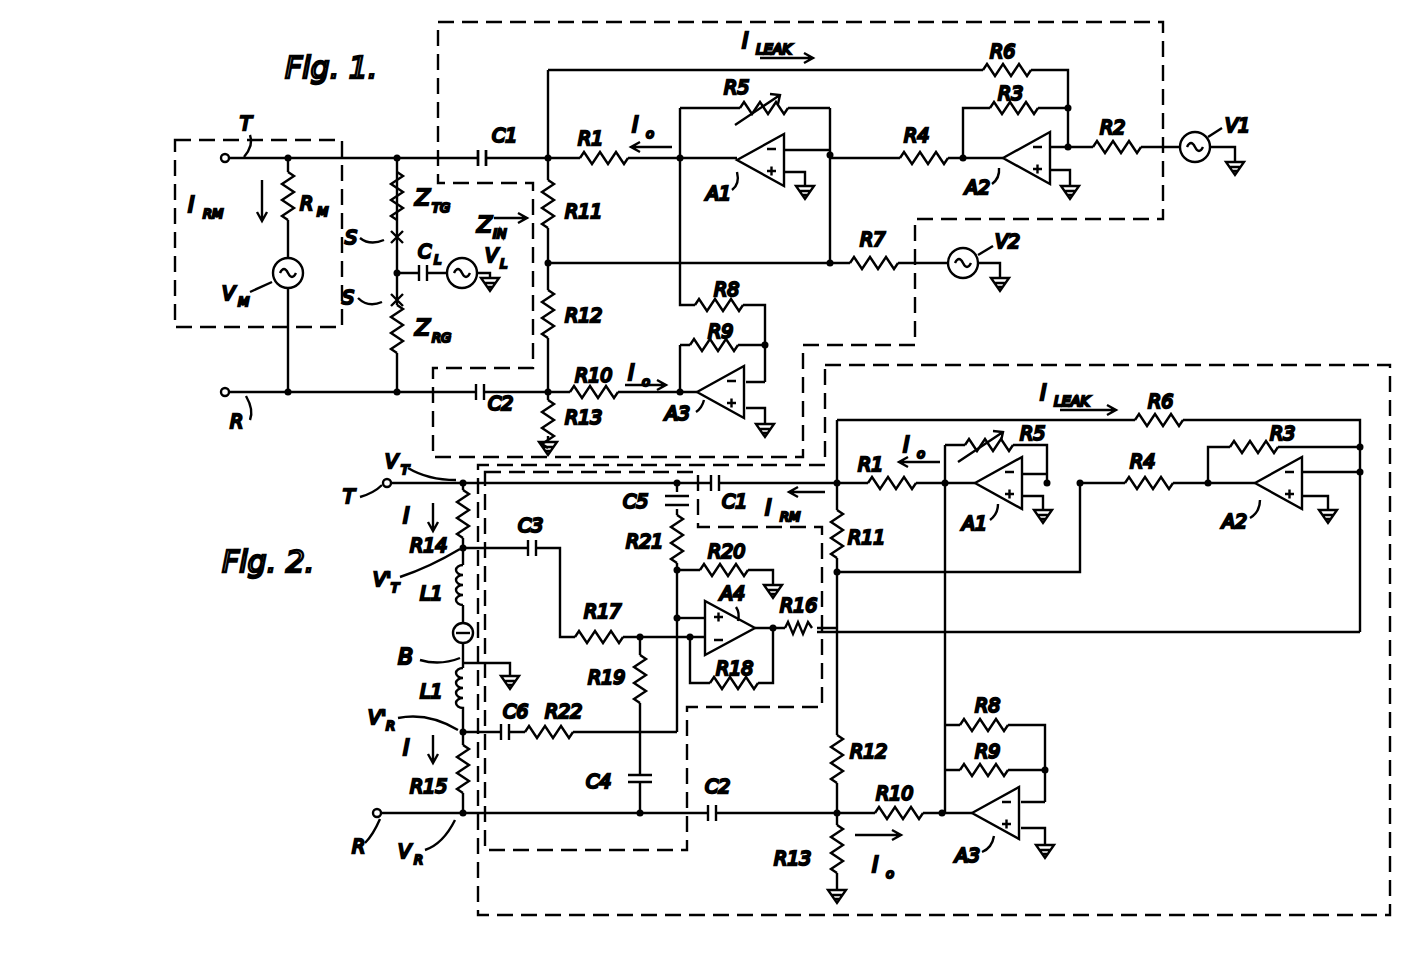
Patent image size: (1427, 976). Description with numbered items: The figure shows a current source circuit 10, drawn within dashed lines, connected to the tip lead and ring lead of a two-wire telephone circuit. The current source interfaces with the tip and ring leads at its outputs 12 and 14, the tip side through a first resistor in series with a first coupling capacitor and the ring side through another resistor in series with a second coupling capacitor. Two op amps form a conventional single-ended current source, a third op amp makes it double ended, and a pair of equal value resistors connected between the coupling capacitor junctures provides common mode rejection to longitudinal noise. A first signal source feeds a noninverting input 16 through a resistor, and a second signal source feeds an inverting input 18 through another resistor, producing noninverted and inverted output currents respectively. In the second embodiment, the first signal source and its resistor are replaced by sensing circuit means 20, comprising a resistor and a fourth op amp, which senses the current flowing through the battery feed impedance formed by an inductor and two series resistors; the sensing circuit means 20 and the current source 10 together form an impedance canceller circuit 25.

In FIG. 1, the current source circuit 10 is at (1194, 77).
In FIG. 2, the current source circuit 10 is at (1154, 655).
In FIG. 1, the output 12 is at (440, 155).
In FIG. 1, the output 14 is at (452, 396).
In FIG. 1, the noninverting input 16 is at (1182, 144).
In FIG. 1, the inverting input 18 is at (916, 268).
In FIG. 2, the sensing circuit means 20 is at (520, 864).
In FIG. 2, the impedance canceller circuit 25 is at (1164, 364).